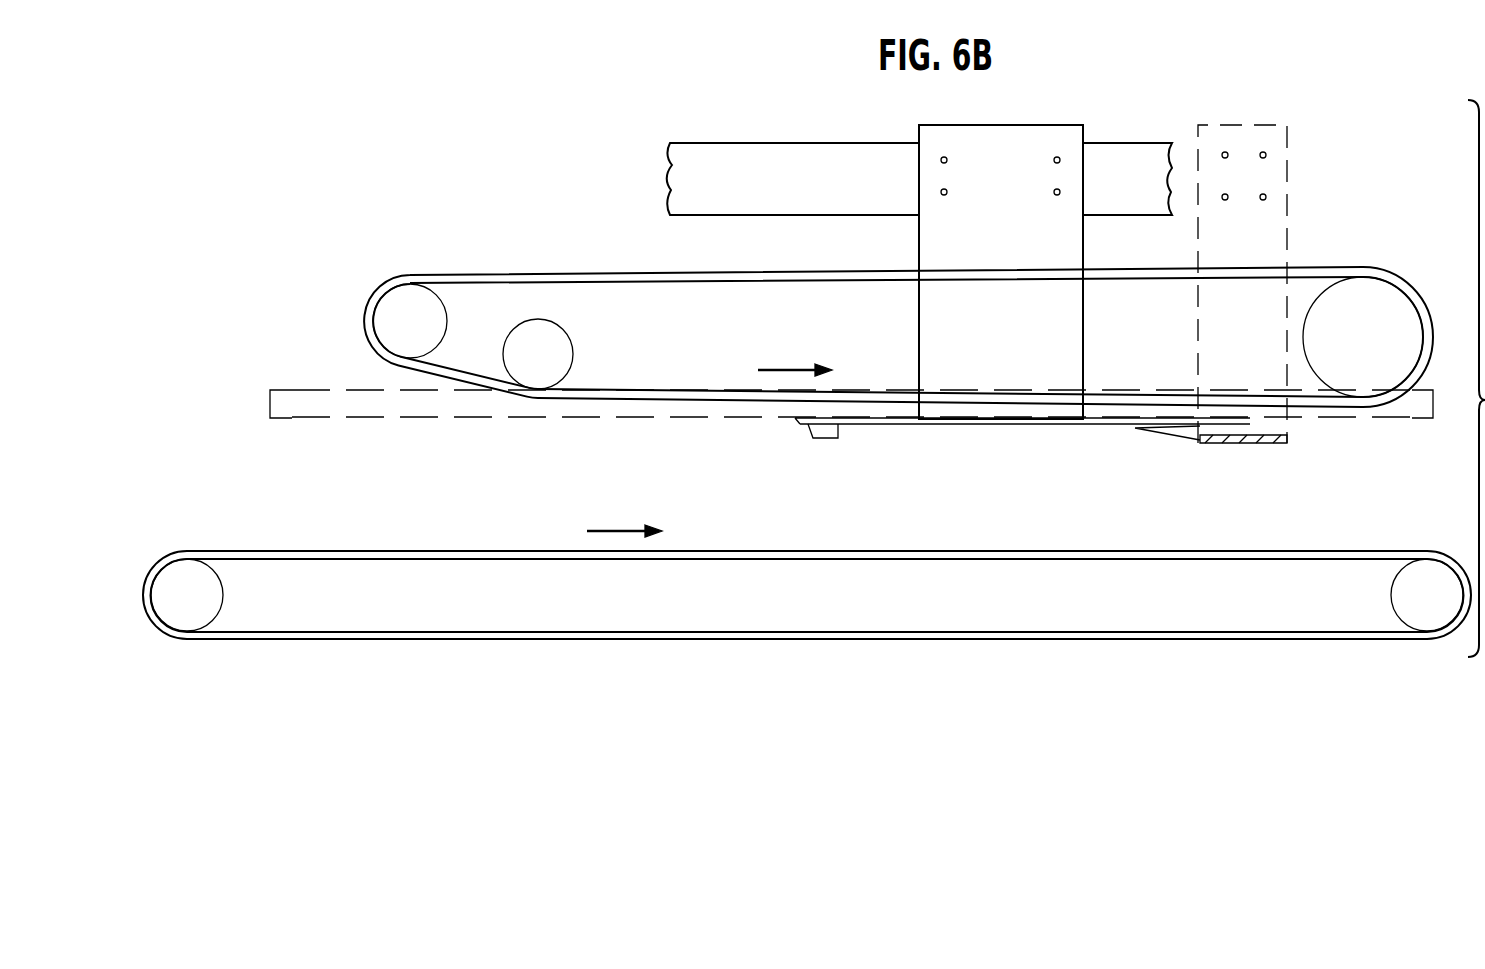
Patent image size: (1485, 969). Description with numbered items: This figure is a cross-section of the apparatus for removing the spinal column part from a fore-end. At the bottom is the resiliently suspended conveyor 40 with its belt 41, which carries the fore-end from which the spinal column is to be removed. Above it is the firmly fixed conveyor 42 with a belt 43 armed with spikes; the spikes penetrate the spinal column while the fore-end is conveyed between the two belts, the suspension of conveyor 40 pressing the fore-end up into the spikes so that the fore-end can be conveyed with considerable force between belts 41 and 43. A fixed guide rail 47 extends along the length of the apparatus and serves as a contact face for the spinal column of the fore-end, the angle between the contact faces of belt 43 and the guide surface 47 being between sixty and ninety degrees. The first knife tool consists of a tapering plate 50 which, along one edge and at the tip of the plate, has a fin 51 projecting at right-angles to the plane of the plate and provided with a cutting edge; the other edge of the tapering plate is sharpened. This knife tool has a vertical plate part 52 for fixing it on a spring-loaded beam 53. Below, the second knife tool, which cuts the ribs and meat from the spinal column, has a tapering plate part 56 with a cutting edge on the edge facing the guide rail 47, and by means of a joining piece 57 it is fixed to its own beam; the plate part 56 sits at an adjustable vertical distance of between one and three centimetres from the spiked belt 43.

The conveyor 40 is at (180, 580).
The belt 41 is at (443, 556).
The conveyor 42 is at (405, 325).
The belt 43 is at (645, 272).
The guide rail 47 is at (304, 400).
The tapering plate 50 is at (921, 420).
The fin 51 is at (825, 438).
The vertical plate part 52 is at (993, 370).
The spring-loaded beam 53 is at (800, 150).
The tapering plate part 56 is at (1233, 445).
The joining piece 57 is at (1215, 325).